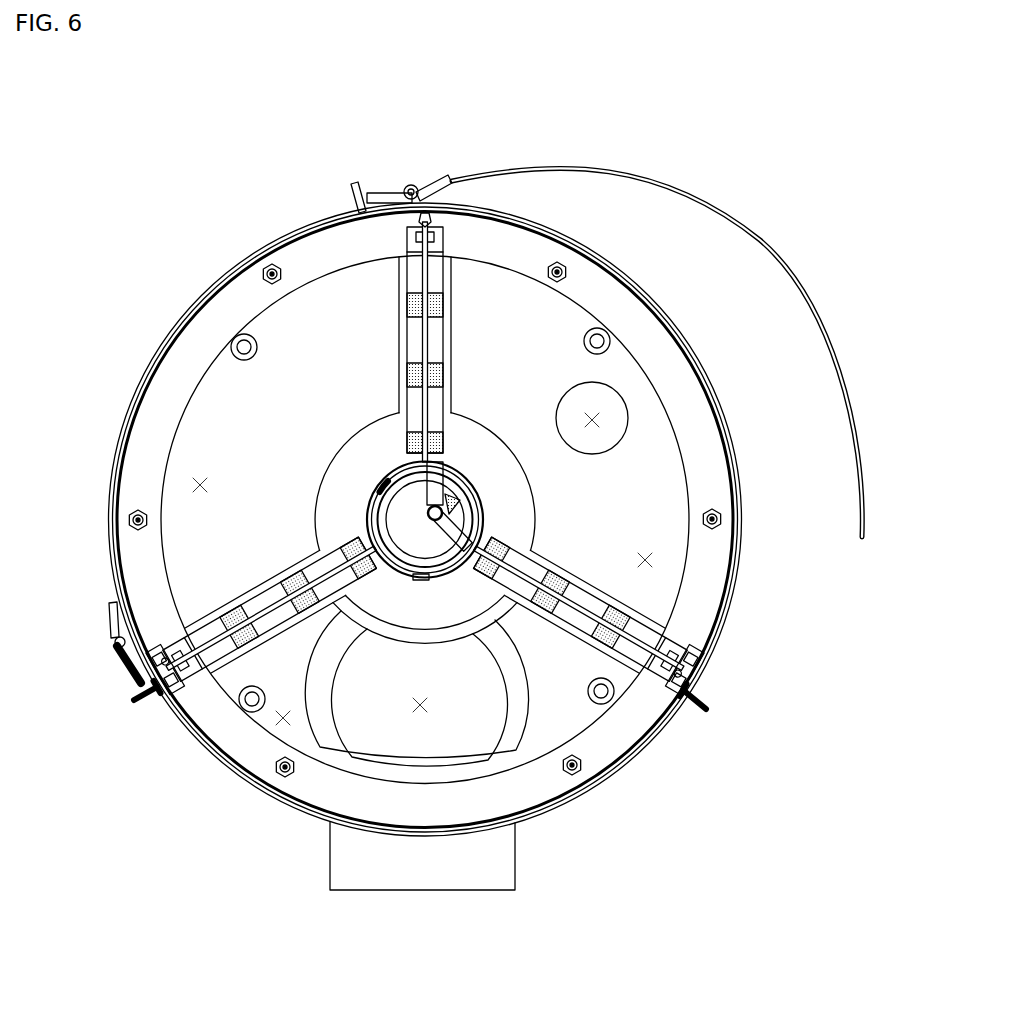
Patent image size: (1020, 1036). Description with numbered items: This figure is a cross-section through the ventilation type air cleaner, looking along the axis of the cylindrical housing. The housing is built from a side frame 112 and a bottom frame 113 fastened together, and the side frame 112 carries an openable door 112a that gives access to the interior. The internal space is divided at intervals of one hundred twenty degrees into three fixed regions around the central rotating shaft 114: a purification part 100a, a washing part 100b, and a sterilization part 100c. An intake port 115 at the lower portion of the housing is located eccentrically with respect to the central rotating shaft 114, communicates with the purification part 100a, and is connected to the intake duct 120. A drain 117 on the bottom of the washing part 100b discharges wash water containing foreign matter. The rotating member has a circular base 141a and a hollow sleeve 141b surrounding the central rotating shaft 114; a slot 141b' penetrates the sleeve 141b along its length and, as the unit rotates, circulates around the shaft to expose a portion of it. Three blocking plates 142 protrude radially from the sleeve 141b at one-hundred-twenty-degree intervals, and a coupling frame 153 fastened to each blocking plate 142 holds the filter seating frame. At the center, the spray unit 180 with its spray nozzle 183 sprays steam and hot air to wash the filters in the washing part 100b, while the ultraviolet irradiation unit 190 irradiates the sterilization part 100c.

The side frame 112 is at (663, 730).
The door 112a is at (153, 345).
The bottom frame 113 is at (570, 708).
The central rotating shaft 114 is at (386, 474).
The intake port 115 is at (420, 705).
The drain 117 is at (596, 418).
The intake duct 120 is at (430, 890).
The base 141a is at (547, 780).
The sleeve 141b is at (408, 459).
The slot 141b' is at (307, 463).
The blocking plate 142 is at (430, 272).
The coupling frame 153 is at (442, 303).
The spray unit 180 is at (433, 518).
The spray nozzle 183 is at (462, 496).
The ultraviolet irradiation unit 190 is at (390, 515).
The purification part 100a is at (283, 718).
The washing part 100b is at (645, 560).
The sterilization part 100c is at (200, 485).